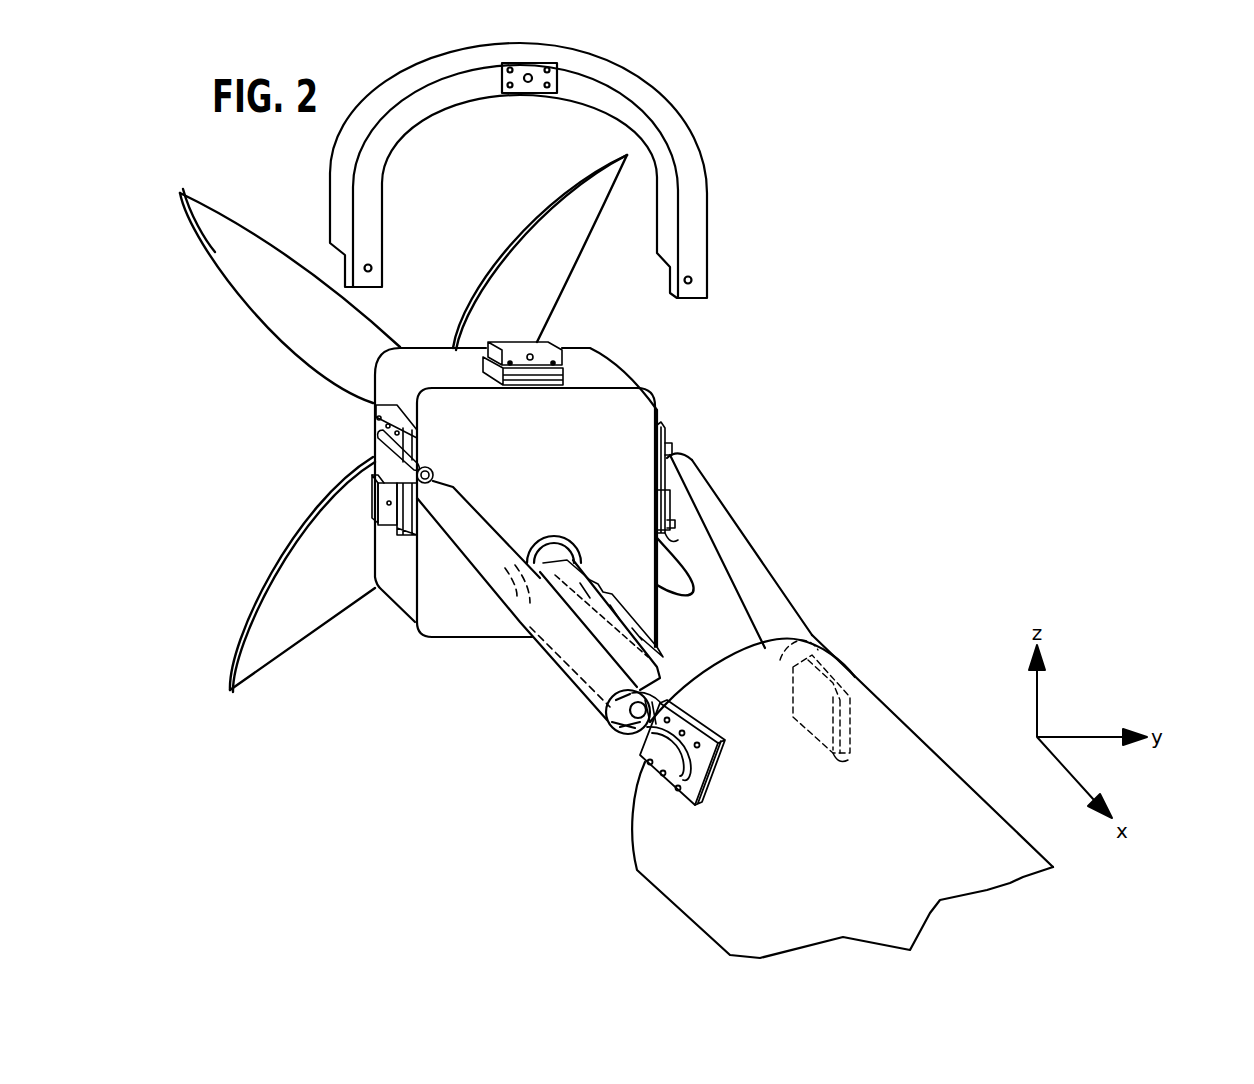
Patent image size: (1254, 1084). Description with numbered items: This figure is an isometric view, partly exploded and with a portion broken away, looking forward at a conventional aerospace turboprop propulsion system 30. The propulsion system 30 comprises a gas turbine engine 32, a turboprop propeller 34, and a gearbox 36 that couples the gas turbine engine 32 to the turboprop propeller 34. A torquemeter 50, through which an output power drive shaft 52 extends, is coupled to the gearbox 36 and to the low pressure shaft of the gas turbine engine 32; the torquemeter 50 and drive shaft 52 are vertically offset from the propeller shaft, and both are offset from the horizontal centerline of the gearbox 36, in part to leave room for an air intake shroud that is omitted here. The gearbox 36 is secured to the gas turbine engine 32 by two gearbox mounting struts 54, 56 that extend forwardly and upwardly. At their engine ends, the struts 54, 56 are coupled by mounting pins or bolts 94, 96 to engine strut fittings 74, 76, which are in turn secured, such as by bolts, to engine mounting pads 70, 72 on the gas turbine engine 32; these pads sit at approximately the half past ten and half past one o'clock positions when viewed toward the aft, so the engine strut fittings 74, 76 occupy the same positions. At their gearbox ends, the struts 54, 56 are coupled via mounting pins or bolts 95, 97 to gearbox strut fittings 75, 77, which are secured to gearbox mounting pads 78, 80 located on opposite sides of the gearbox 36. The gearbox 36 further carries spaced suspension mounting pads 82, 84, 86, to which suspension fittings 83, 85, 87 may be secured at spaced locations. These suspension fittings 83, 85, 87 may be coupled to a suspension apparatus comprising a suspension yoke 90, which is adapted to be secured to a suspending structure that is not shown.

The turboprop propulsion system 30 is at (639, 476).
The gas turbine engine 32 is at (842, 796).
The turboprop propeller 34 is at (305, 315).
The gearbox 36 is at (453, 617).
The torquemeter 50 is at (673, 650).
The output power drive shaft 52 is at (602, 630).
The gearbox mounting strut 54 is at (490, 567).
The gearbox mounting strut 56 is at (763, 560).
The engine mounting pad 70 is at (703, 790).
The engine mounting pad 72 is at (840, 762).
The engine strut fitting 74 is at (648, 762).
The gearbox strut fitting 75 is at (375, 462).
The engine strut fitting 76 is at (853, 687).
The gearbox strut fitting 77 is at (666, 438).
The gearbox mounting pad 78 is at (374, 412).
The gearbox mounting pad 80 is at (657, 436).
The suspension mounting pad 82 is at (400, 538).
The suspension fitting 83 is at (387, 512).
The suspension mounting pad 84 is at (567, 377).
The suspension fitting 85 is at (550, 353).
The suspension mounting pad 86 is at (662, 513).
The suspension fitting 87 is at (670, 542).
The suspension yoke 90 is at (657, 117).
The mounting pin or bolt 94 is at (617, 733).
The mounting pin or bolt 95 is at (372, 478).
The mounting pin or bolt 96 is at (810, 645).
The mounting pin or bolt 97 is at (667, 447).